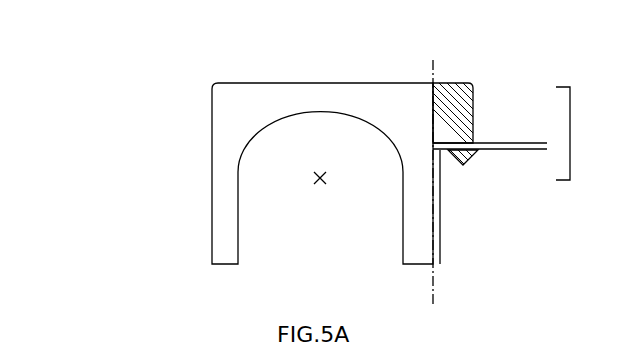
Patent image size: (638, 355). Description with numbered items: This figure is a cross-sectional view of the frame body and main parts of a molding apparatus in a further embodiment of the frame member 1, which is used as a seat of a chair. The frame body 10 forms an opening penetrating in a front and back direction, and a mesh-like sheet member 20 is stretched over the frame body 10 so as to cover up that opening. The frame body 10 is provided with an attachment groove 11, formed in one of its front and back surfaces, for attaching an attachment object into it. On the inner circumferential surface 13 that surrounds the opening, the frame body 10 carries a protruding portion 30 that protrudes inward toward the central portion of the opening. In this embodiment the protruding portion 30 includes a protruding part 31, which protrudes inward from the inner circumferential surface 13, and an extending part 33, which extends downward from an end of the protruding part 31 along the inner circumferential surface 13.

The frame member 1 is at (100, 97).
The frame body 10 is at (235, 83).
The attachment groove 11 is at (322, 184).
The inner circumferential surface 13 is at (433, 68).
The sheet member 20 is at (440, 210).
The protruding portion 30 is at (578, 146).
The protruding part 31 is at (473, 126).
The extending part 33 is at (467, 163).